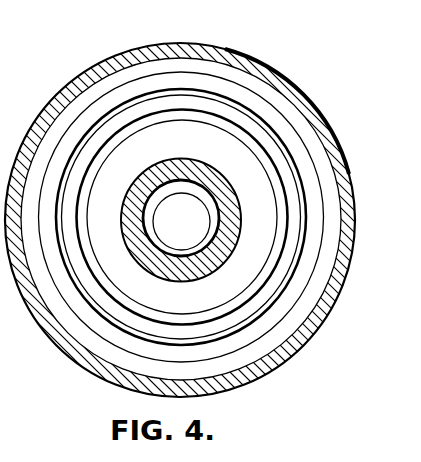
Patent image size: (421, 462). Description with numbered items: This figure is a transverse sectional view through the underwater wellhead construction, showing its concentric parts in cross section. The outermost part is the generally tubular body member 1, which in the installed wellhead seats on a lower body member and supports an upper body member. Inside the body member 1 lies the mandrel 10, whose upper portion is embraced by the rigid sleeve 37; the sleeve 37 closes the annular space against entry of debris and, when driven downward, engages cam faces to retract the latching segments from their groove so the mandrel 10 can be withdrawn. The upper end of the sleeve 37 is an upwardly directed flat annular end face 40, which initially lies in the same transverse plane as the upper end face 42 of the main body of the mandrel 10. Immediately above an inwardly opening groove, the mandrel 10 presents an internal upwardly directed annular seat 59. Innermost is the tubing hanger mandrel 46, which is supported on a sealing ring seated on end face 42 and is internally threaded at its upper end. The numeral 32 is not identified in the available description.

The roller assembly 1 is at (292, 71).
The sleeve 10 is at (240, 106).
The inner rim 37 is at (150, 66).
The ring flange 40 is at (210, 63).
The resilient tire 42 is at (280, 125).
The hub 46 is at (240, 197).
The bushing 59 is at (116, 137).
The shaft (adjacent figure) 32 is at (222, 452).